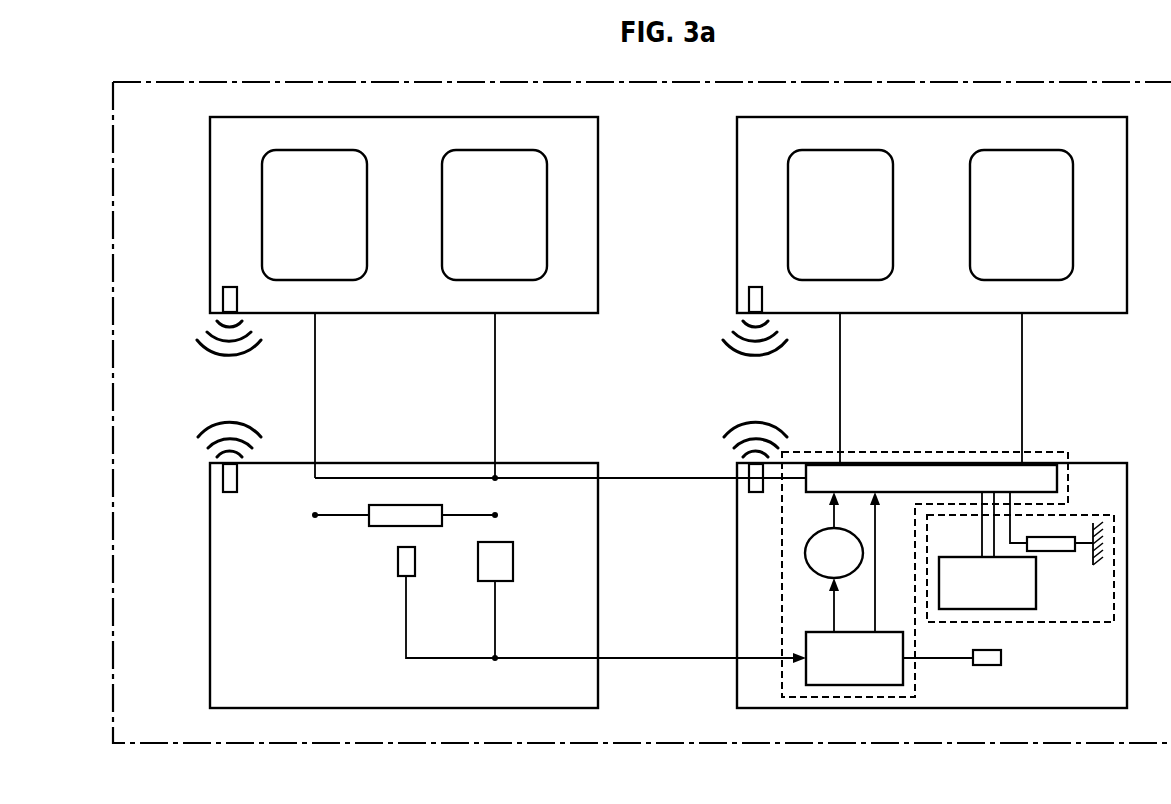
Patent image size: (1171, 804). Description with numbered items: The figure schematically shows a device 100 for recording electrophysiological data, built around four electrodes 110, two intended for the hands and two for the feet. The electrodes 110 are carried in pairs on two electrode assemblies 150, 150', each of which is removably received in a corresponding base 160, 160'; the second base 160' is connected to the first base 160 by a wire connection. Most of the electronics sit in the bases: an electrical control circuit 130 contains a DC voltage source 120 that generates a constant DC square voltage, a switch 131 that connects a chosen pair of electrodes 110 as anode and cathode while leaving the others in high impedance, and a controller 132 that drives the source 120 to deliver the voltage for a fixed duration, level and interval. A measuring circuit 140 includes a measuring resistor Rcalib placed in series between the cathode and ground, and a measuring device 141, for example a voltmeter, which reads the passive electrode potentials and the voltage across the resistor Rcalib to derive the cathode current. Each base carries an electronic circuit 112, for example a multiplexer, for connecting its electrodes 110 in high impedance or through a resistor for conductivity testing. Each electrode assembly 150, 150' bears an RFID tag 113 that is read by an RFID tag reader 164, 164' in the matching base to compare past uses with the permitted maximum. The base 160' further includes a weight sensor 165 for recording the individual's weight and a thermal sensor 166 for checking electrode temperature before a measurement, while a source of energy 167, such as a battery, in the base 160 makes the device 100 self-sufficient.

The device for recording electrophysiological data 100 is at (667, 744).
The electrodes 110 is at (331, 224).
The electronic circuit 112 is at (386, 527).
The RFID tag 113 is at (229, 287).
The DC voltage source 120 is at (850, 564).
The electrical control circuit 130 is at (1045, 452).
The switch 131 is at (1060, 478).
The controller 132 is at (870, 669).
The measuring circuit 140 is at (1005, 623).
The measuring device 141 is at (1004, 594).
The electrode assembly 150 is at (895, 215).
The electrode assembly 150' is at (365, 215).
The base 160 is at (895, 585).
The base 160' is at (366, 585).
The RFID tag reader 164 is at (735, 490).
The RFID tag reader 164' is at (208, 490).
The weight sensor 165 is at (415, 562).
The thermal sensor 166 is at (513, 562).
The source of energy 167 is at (985, 665).
The measuring resistor Rcalib is at (1050, 551).